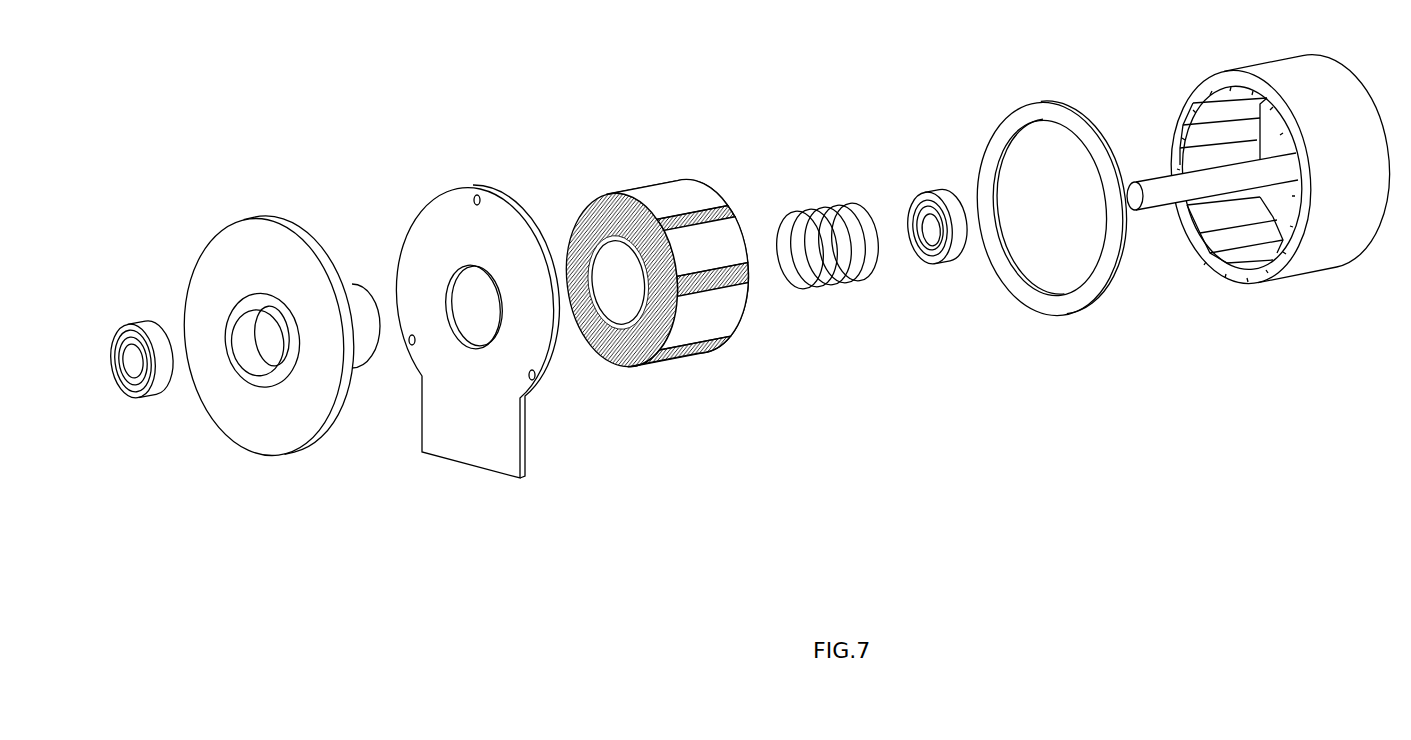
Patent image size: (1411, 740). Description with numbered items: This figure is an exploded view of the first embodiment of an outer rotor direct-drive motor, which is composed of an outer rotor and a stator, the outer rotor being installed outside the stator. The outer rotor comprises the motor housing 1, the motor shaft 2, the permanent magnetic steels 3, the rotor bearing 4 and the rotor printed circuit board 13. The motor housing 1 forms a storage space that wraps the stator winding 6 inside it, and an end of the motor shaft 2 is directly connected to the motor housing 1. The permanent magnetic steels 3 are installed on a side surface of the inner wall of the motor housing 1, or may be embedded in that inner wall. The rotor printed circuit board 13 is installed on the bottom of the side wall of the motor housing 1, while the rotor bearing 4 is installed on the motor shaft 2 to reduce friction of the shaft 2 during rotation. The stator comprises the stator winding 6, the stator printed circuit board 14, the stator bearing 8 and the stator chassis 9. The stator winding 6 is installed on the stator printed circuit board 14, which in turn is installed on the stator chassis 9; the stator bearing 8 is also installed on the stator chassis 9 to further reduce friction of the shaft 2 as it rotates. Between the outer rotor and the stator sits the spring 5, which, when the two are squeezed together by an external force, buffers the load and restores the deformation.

The motor housing 1 is at (1338, 83).
The motor shaft 2 is at (1165, 183).
The permanent magnetic steels 3 is at (1213, 237).
The rotor bearing 4 is at (950, 197).
The spring 5 is at (838, 205).
The stator winding 6 is at (672, 200).
The stator bearing 8 is at (150, 328).
The stator chassis 9 is at (243, 240).
The rotor printed circuit board 13 is at (1028, 118).
The stator printed circuit board 14 is at (448, 205).